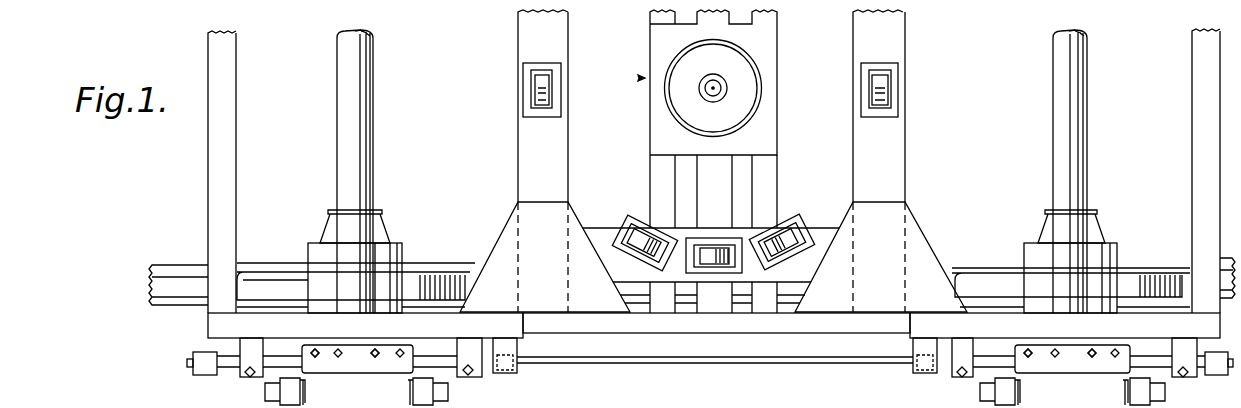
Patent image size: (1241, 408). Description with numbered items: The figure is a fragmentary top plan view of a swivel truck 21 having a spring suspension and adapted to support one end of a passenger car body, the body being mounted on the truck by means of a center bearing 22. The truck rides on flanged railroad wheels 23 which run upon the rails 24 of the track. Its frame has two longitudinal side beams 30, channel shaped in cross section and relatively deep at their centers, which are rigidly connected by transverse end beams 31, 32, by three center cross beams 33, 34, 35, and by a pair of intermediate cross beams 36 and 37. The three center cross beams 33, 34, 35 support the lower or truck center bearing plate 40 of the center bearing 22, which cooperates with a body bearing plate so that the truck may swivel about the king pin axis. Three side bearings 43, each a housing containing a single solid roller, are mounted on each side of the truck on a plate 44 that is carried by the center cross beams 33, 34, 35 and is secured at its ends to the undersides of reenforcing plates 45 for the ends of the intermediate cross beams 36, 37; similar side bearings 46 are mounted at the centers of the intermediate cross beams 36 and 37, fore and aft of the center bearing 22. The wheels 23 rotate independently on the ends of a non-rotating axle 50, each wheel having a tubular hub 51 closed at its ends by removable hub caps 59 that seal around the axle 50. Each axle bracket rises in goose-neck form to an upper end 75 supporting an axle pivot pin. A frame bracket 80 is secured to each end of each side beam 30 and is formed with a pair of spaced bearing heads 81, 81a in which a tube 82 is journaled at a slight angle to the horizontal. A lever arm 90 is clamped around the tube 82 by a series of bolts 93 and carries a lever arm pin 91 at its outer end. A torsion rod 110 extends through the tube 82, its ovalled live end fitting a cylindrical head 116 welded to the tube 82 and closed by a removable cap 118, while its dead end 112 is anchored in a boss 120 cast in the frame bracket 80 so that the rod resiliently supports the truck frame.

The swivel truck 21 is at (440, 95).
The center bearing 22 is at (645, 78).
The flanged railroad wheel 23 is at (275, 265).
The rail 24 is at (158, 272).
The longitudinal side beam 30 is at (706, 322).
The transverse end beam 31 is at (218, 155).
The transverse end beam 32 is at (1197, 125).
The center cross beam 33 is at (665, 178).
The center cross beam 34 is at (714, 234).
The center cross beam 35 is at (765, 178).
The intermediate cross beam 36 is at (525, 152).
The intermediate cross beam 37 is at (898, 143).
The truck center bearing plate 40 is at (768, 117).
The side bearing 43 is at (684, 262).
The plate 44 is at (798, 228).
The reenforcing plate 45 is at (507, 226).
The side bearing 46 is at (538, 88).
The axle 50 is at (343, 122).
The tubular hub 51 is at (400, 257).
The hub cap 59 is at (382, 228).
The upper end of axle bracket 75 is at (360, 372).
The frame bracket 80 is at (714, 325).
The bearing head 81 is at (245, 376).
The bearing head 81a is at (475, 376).
The tube 82 is at (997, 354).
The lever arm 90 is at (331, 366).
The lever arm pin 91 is at (963, 378).
The bolt 93 is at (376, 366).
The torsion rod 110 is at (654, 362).
The dead end of torsion rod 112 is at (512, 372).
The cylindrical head 116 is at (200, 366).
The removable cap 118 is at (190, 357).
The boss 120 is at (517, 348).